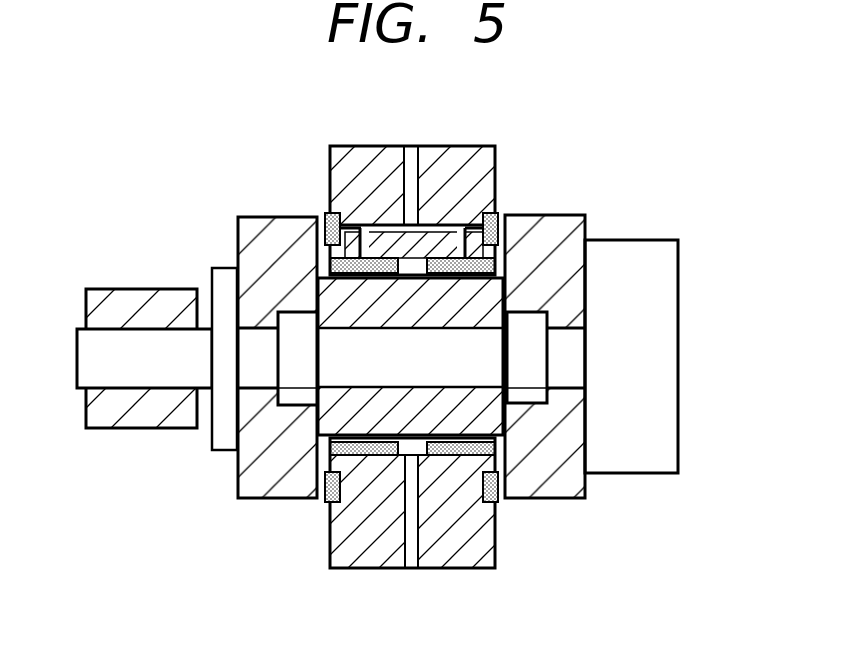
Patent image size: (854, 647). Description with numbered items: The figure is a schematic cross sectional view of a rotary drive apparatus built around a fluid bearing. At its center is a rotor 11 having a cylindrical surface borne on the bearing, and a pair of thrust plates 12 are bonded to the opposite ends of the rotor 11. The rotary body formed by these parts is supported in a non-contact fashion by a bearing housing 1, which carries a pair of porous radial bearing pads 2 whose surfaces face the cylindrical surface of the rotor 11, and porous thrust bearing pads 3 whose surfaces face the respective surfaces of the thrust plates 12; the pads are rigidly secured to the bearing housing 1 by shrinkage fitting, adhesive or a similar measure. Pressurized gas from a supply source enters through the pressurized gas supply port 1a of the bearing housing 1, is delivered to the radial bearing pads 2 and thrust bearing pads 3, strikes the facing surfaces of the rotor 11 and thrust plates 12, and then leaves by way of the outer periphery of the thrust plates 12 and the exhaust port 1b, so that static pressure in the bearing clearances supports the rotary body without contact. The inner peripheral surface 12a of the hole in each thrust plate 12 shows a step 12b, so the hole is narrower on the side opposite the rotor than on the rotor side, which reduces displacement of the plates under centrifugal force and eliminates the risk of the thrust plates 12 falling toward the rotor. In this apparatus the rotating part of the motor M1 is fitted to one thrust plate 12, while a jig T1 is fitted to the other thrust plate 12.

The bearing housing 1 is at (412, 177).
The pressurized gas supply port 1a is at (408, 163).
The exhaust port 1b is at (412, 534).
The porous radial bearing pad 2 is at (350, 455).
The porous thrust bearing pad 3 is at (328, 503).
The rotor 11 is at (335, 298).
The thrust plate 12 is at (248, 236).
The inner peripheral surface 12a is at (254, 386).
The step 12b is at (290, 389).
The motor M1 is at (667, 268).
The jig T1 is at (107, 413).